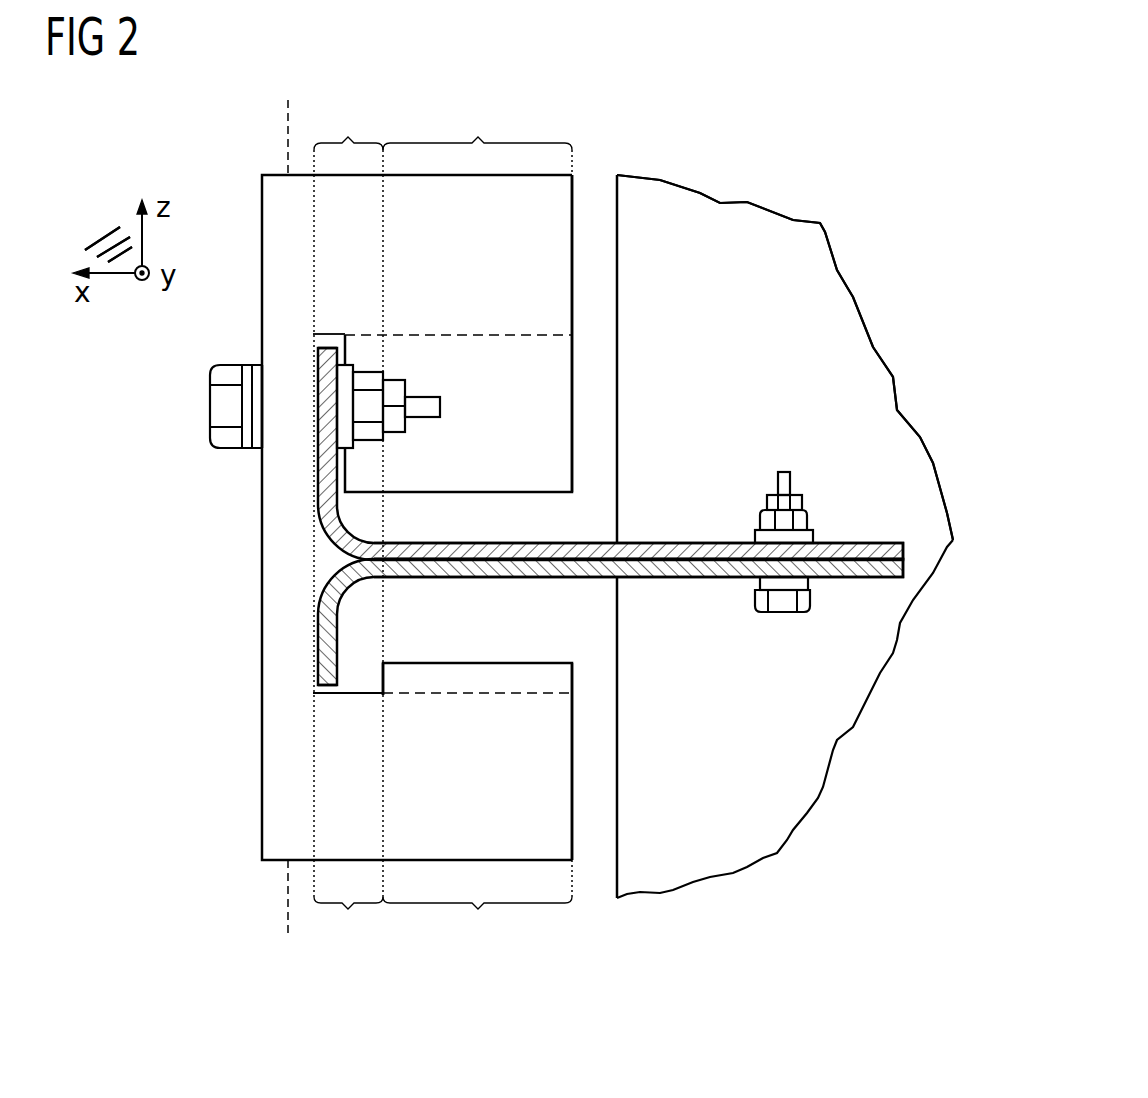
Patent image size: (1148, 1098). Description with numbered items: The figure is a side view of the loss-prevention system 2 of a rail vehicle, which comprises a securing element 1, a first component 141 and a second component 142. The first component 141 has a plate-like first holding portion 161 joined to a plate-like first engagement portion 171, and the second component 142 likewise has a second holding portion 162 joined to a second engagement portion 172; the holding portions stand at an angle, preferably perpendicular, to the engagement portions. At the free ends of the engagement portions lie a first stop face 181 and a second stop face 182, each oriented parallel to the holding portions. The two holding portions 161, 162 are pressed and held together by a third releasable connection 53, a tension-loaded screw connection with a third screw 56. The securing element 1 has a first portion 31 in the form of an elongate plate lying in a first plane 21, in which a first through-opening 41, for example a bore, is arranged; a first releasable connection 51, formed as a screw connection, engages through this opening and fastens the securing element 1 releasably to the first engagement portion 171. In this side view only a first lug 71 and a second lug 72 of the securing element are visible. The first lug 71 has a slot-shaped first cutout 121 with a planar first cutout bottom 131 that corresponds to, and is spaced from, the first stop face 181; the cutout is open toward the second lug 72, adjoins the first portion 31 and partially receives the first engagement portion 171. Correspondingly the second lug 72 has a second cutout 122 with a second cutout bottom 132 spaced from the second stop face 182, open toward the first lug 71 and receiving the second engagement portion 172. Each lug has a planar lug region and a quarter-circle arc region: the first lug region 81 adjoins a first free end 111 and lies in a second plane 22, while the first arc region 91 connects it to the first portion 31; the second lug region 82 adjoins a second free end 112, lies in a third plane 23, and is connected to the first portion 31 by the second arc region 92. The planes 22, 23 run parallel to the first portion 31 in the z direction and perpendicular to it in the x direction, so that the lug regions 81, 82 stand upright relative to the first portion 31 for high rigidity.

The securing element 1 is at (552, 313).
The loss-prevention system 2 is at (792, 140).
The first plane 21 is at (288, 130).
The second plane 22 is at (108, 228).
The third plane 23 is at (108, 213).
The first portion 31 is at (272, 808).
The first through-opening 41 is at (288, 392).
The first releasable connection 51 is at (220, 408).
The third releasable connection 53 is at (782, 603).
The third screw 56 is at (778, 478).
The first lug 71 is at (552, 270).
The second lug 72 is at (552, 768).
The first lug region 81 is at (477, 501).
The second lug region 82 is at (477, 903).
The first arc region 91 is at (348, 501).
The second arc region 92 is at (348, 922).
The first free end 111 is at (573, 223).
The second free end 112 is at (572, 818).
The first cutout 121 is at (340, 453).
The second cutout 122 is at (383, 689).
The first cutout bottom 131 is at (337, 340).
The second cutout bottom 132 is at (343, 693).
The first component 141 is at (833, 295).
The second component 142 is at (788, 824).
The first holding portion 161 is at (650, 552).
The second holding portion 162 is at (652, 578).
The first engagement portion 171 is at (327, 478).
The second engagement portion 172 is at (322, 640).
The first stop face 181 is at (326, 336).
The second stop face 182 is at (337, 695).